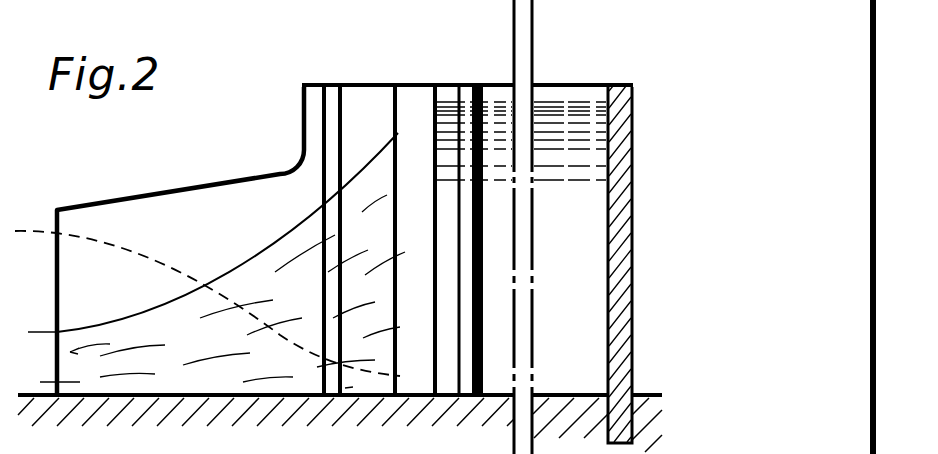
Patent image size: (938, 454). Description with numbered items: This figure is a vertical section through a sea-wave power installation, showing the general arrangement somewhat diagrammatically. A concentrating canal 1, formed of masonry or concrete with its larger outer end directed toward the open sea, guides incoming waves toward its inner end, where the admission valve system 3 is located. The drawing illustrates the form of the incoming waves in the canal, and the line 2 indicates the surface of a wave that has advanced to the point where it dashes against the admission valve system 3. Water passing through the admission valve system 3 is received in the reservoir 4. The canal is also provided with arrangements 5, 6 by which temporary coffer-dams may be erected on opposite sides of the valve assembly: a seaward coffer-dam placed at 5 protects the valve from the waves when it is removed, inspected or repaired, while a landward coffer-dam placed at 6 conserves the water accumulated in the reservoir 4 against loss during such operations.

The concentrating canal 1 is at (193, 217).
The wave surface line 2 is at (297, 233).
The admission valve system 3 is at (401, 103).
The reservoir 4 is at (556, 133).
The seaward coffer-dam arrangement 5 is at (332, 105).
The landward coffer-dam arrangement 6 is at (463, 95).